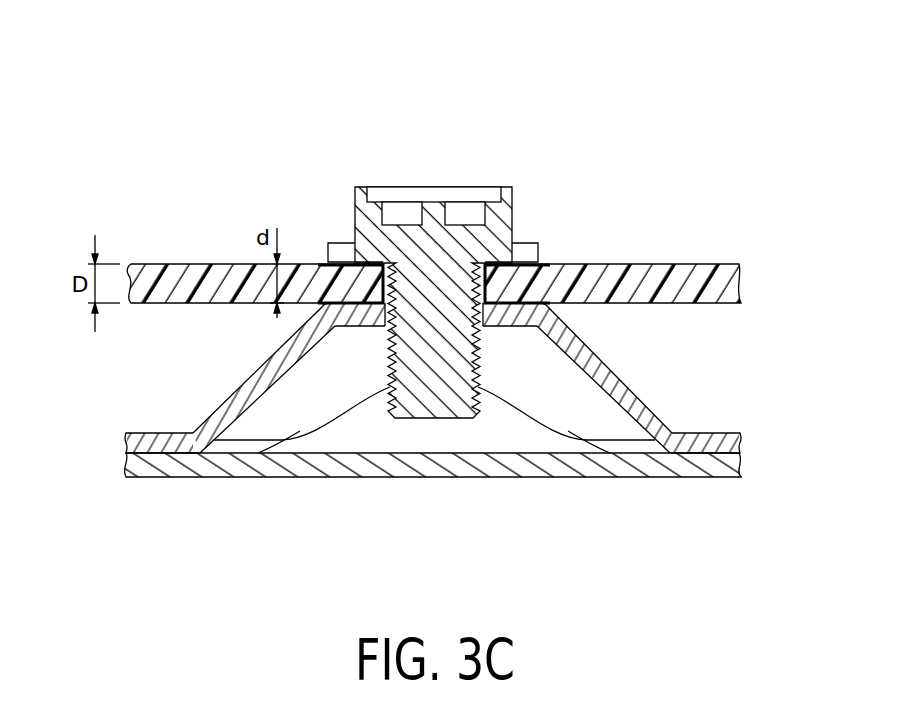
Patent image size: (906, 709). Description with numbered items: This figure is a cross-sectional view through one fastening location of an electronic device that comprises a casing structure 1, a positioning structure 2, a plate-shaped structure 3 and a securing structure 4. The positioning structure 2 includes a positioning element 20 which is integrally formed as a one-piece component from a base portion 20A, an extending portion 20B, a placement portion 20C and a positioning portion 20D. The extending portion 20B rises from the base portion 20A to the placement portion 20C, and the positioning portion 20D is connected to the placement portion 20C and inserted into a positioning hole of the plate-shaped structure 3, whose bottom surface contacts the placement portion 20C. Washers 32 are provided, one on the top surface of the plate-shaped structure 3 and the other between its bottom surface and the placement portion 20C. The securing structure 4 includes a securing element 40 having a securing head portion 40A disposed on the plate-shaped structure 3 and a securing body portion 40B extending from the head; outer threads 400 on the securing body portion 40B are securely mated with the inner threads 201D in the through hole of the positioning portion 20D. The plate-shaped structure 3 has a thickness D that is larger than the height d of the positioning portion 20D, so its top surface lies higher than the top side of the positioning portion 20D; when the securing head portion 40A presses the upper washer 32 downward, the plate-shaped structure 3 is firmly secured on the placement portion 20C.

The casing structure 1 is at (248, 478).
The positioning structure 2 is at (433, 441).
The plate-shaped structure 3 is at (635, 262).
The securing structure 4 is at (458, 221).
The positioning element 20 is at (433, 441).
The base portion 20A is at (688, 443).
The extending portion 20B is at (613, 385).
The placement portion 20C is at (515, 318).
The positioning portion 20D is at (470, 295).
The washer 32 is at (340, 243).
The securing element 40 is at (458, 242).
The securing head portion 40A is at (500, 220).
The securing body portion 40B is at (421, 305).
The inner threads 201D is at (421, 357).
The outer threads 400 is at (390, 370).